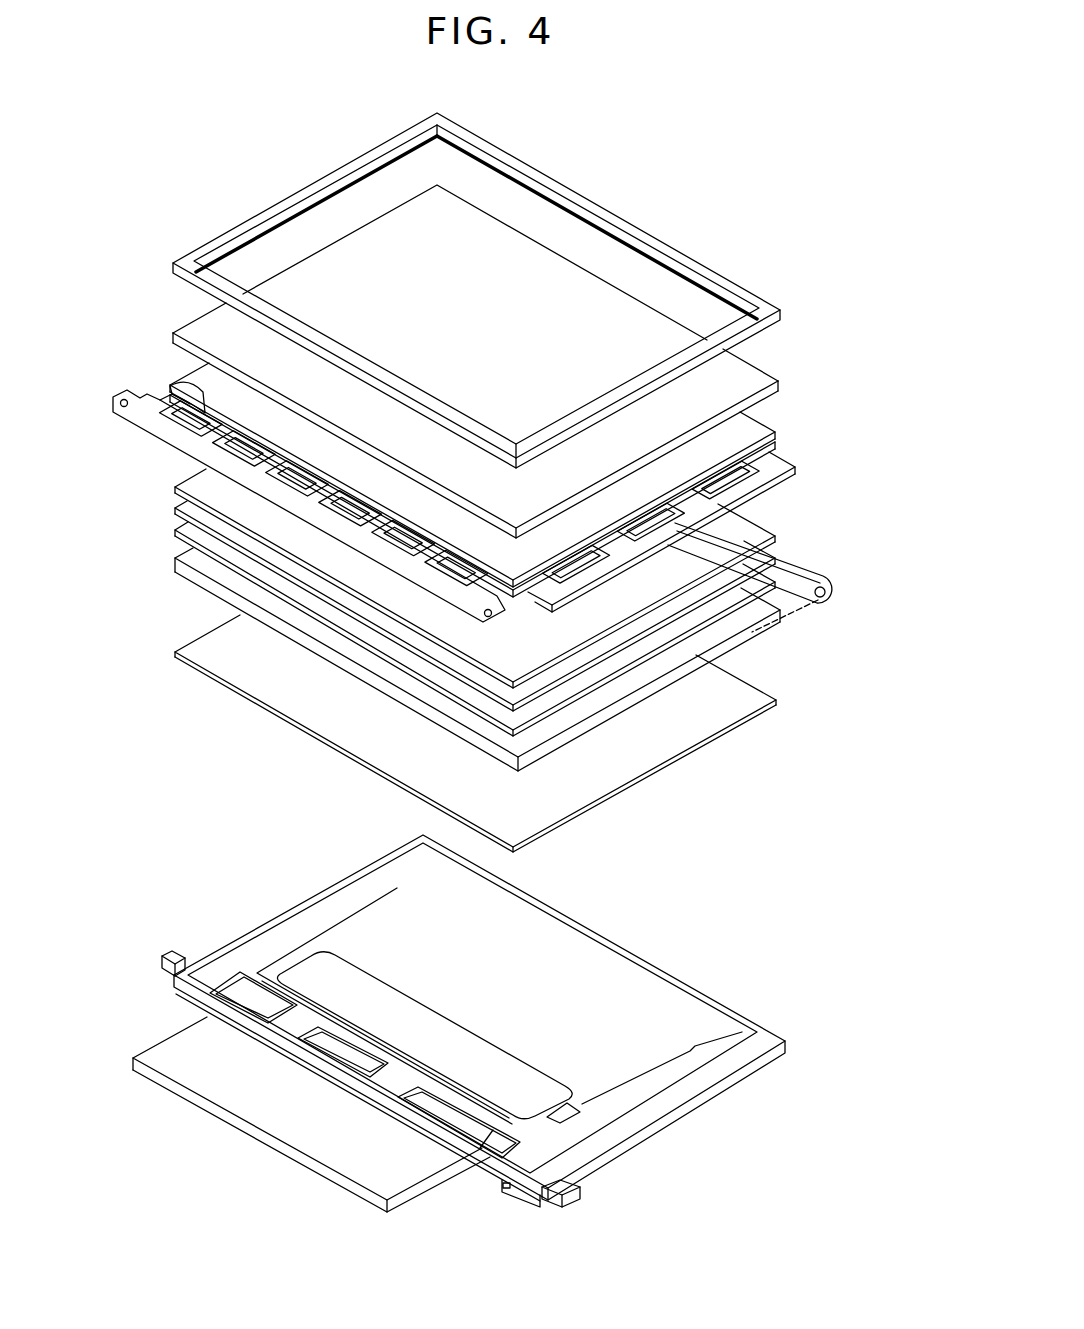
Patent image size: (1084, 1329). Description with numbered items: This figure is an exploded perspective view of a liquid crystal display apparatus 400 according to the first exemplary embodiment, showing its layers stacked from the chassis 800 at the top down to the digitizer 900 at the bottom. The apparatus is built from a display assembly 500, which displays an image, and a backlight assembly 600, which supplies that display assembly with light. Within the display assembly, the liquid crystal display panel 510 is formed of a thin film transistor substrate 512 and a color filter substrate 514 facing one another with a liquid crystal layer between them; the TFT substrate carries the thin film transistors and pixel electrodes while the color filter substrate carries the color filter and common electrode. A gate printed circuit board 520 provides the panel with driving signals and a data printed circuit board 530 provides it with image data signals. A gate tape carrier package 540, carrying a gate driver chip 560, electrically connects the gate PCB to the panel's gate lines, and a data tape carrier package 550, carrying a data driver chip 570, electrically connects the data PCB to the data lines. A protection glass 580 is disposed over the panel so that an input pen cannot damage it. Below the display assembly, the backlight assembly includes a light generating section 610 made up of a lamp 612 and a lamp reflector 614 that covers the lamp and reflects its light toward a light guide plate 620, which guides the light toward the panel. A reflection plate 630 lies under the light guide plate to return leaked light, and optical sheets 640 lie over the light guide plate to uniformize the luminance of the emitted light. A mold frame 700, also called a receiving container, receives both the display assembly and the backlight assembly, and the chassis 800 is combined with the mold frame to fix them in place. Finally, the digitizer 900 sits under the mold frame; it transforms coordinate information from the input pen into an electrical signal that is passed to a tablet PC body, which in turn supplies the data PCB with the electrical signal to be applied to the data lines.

The liquid crystal display apparatus 400 is at (638, 84).
The display assembly 500 is at (160, 299).
The liquid crystal display panel 510 is at (847, 385).
The thin film transistor substrate 512 is at (777, 441).
The color filter substrate 514 is at (755, 419).
The gate printed circuit board 520 is at (773, 468).
The data printed circuit board 530 is at (162, 430).
The gate tape carrier package 540 is at (770, 547).
The data tape carrier package 550 is at (186, 384).
The gate driver chip 560 is at (774, 485).
The data driver chip 570 is at (172, 396).
The protection glass 580 is at (765, 378).
The backlight assembly 600 is at (110, 663).
The light generating section 610 is at (896, 570).
The lamp 612 is at (826, 594).
The lamp reflector 614 is at (824, 580).
The light guide plate 620 is at (728, 628).
The reflection plate 630 is at (670, 727).
The optical sheets 640 is at (172, 483).
The mold frame 700 is at (257, 912).
The chassis 800 is at (280, 190).
The digitizer 900 is at (262, 1107).